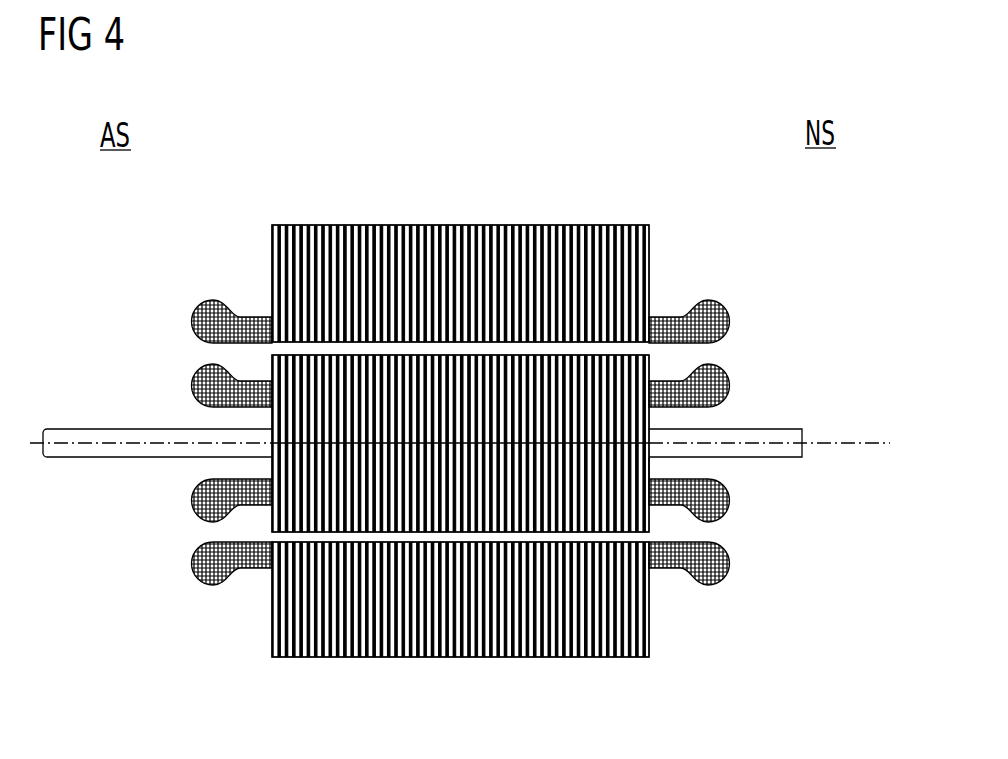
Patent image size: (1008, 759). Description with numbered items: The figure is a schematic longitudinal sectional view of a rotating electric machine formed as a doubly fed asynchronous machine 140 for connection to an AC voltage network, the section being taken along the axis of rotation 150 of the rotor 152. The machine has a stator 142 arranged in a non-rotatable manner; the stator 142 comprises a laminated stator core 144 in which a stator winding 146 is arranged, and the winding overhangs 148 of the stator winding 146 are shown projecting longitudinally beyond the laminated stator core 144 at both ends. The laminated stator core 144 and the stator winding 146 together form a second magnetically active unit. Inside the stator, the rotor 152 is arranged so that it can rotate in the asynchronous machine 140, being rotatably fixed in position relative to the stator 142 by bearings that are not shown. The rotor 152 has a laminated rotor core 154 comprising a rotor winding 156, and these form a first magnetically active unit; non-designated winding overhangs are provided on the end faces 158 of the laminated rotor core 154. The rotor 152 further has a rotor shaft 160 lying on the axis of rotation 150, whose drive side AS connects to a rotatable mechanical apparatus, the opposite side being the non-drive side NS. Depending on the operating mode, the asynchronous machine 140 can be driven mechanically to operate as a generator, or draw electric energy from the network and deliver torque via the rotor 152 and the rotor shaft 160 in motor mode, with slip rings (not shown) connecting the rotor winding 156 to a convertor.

The doubly fed asynchronous machine 140 is at (583, 188).
The stator 142 is at (246, 245).
The laminated stator core 144 is at (367, 225).
The stator winding 146 is at (195, 325).
The winding overhangs 148 is at (748, 316).
The axis of rotation 150 is at (872, 443).
The rotor 152 is at (748, 385).
The laminated rotor core 154 is at (478, 498).
The rotor winding 156 is at (195, 390).
The end faces 158 is at (652, 462).
The rotor shaft 160 is at (63, 429).